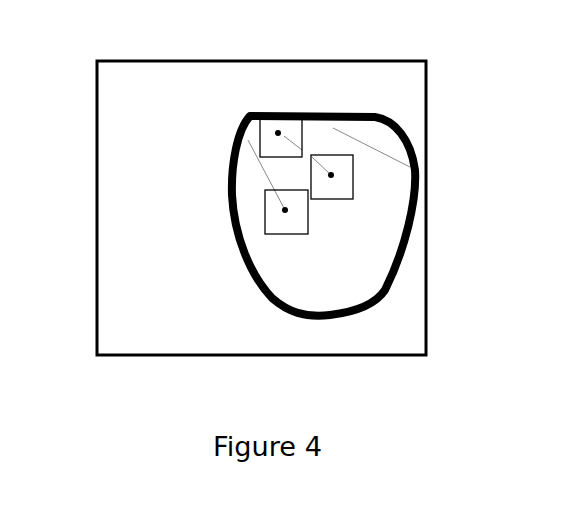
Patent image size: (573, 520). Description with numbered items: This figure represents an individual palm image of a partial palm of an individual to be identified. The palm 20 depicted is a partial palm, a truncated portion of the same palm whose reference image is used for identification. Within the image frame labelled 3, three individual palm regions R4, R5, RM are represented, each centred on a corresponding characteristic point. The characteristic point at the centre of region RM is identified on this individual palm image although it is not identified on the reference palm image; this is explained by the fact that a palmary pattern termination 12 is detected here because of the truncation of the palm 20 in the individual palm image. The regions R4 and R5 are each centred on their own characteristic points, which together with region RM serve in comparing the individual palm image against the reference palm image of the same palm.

The display screen 3 is at (110, 93).
The palmary pattern termination 12 is at (305, 150).
The palm 20 is at (323, 217).
The individual palm region RM is at (302, 150).
The individual palm region R4 is at (353, 173).
The individual palm region R5 is at (308, 226).